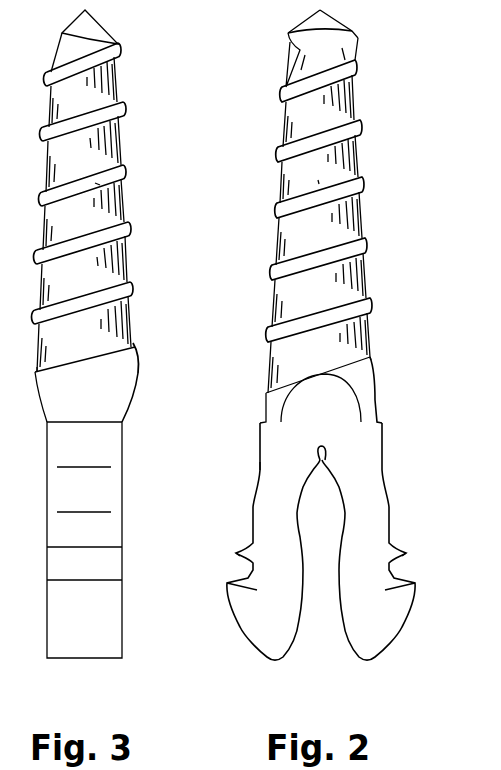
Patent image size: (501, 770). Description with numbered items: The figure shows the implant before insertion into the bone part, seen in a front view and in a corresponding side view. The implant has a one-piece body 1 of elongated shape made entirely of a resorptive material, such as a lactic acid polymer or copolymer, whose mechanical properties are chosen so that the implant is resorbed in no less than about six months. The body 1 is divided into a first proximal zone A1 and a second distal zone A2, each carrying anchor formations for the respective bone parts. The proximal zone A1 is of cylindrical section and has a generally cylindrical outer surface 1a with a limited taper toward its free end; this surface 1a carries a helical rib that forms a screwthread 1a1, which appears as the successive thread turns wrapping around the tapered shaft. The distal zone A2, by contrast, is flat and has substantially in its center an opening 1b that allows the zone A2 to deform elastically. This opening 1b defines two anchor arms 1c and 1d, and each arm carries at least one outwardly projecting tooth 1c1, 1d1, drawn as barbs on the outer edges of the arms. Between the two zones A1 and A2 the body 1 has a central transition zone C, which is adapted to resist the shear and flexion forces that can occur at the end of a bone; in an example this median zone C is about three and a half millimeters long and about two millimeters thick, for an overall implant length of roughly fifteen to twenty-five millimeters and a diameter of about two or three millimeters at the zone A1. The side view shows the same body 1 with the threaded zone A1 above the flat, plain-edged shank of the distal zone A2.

In FIG. 3, the one-piece body 1 is at (147, 316).
In FIG. 2, the one-piece body 1 is at (402, 328).
In FIG. 3, the generally cylindrical outer surface 1a is at (85, 90).
In FIG. 2, the generally cylindrical outer surface 1a is at (325, 112).
In FIG. 3, the screwthread 1a1 is at (93, 183).
In FIG. 2, the opening 1b is at (322, 500).
In FIG. 3, the anchor arm 1c is at (86, 625).
In FIG. 2, the anchor arm 1c is at (370, 637).
In FIG. 2, the outwardly projecting tooth 1c1 is at (402, 553).
In FIG. 2, the anchor arm 1d is at (277, 635).
In FIG. 2, the outwardly projecting tooth 1d1 is at (240, 553).
In FIG. 2, the first proximal zone A1 is at (308, 182).
In FIG. 2, the second distal zone A2 is at (268, 512).
In FIG. 2, the central zone for transition C is at (303, 402).